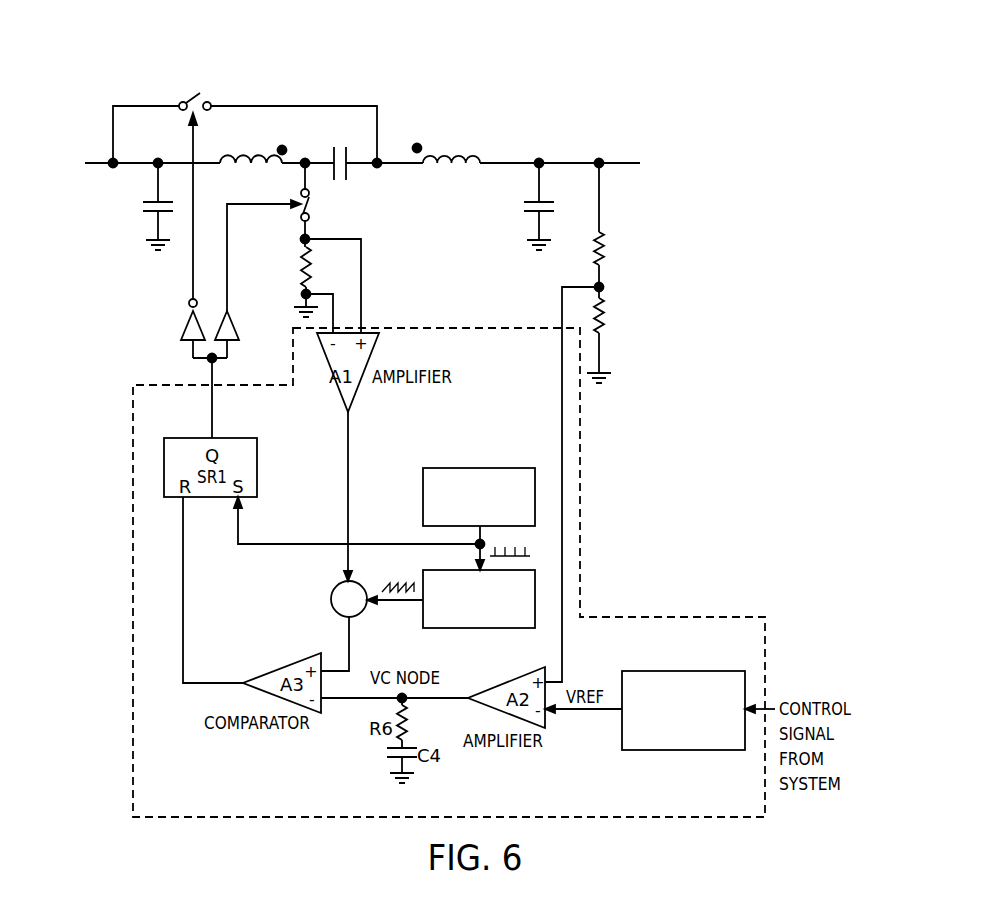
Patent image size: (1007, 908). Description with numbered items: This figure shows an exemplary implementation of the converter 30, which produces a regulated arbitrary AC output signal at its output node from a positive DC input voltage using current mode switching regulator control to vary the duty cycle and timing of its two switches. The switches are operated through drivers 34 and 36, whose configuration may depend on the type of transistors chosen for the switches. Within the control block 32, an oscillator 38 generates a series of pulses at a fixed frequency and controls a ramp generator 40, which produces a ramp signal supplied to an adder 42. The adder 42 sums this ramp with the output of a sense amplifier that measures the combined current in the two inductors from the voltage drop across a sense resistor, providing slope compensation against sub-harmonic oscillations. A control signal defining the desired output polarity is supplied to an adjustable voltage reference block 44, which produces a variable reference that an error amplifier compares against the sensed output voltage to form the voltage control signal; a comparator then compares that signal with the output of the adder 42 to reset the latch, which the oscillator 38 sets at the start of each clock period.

The converter 30 is at (609, 96).
The control block 32 is at (580, 487).
The driver 34 is at (233, 318).
The driver 36 is at (186, 327).
The oscillator 38 is at (507, 468).
The ramp generator 40 is at (535, 603).
The adder 42 is at (332, 593).
The adjustable voltage reference block 44 is at (690, 671).